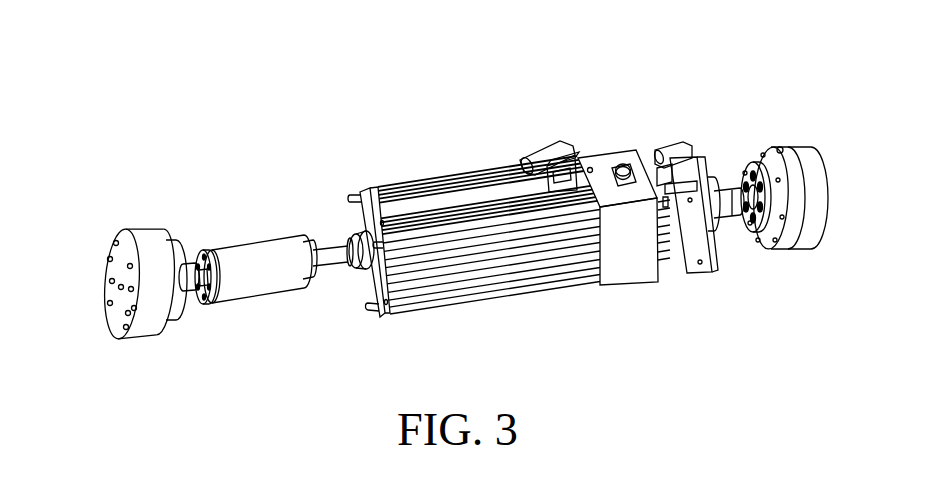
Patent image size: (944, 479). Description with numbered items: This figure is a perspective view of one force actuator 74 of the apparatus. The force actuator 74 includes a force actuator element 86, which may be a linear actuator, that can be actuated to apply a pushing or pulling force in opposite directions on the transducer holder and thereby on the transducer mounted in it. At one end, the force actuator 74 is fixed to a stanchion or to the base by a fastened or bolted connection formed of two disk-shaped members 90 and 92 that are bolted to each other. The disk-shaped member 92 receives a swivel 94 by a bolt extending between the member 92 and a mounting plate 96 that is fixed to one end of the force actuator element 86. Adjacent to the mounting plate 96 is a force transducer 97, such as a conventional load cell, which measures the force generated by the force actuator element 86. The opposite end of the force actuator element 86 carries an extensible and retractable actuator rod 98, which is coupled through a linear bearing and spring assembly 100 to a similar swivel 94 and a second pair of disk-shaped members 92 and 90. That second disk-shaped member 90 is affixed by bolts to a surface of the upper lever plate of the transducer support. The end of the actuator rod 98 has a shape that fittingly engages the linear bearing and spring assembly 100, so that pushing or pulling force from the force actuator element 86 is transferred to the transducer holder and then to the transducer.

The force actuator 74 is at (382, 182).
The force actuator element 86 is at (547, 132).
The disk-shaped member 90 is at (121, 231).
The disk-shaped member 92 is at (144, 230).
The swivel 94 is at (178, 245).
The mounting plate 96 is at (695, 167).
The force transducer 97 is at (712, 238).
The actuator rod 98 is at (333, 245).
The linear bearing and spring assembly 100 is at (260, 233).